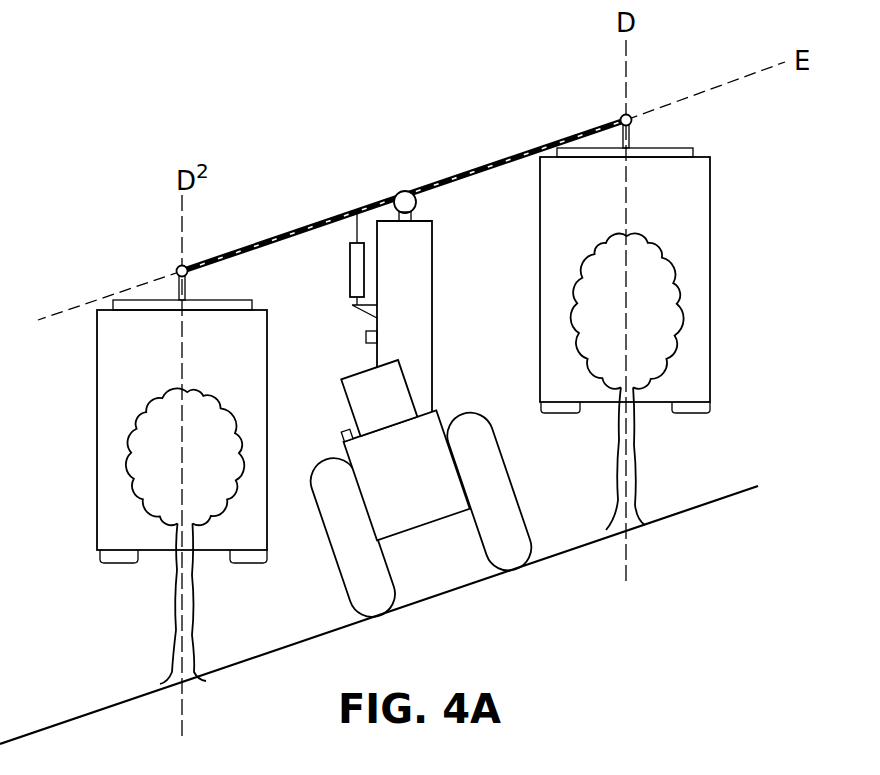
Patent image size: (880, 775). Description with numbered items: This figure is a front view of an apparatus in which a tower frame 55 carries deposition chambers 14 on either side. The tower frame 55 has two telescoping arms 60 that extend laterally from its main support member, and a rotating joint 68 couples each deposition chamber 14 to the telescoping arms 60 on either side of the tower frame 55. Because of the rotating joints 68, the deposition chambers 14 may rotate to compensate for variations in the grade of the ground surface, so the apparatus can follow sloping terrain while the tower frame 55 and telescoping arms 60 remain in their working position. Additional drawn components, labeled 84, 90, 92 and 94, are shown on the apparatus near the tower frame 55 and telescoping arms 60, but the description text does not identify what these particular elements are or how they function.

The deposition chamber 14 is at (97, 388).
The tower frame 55 is at (432, 278).
The telescoping arm 60 is at (290, 234).
The rotating joint 68 is at (177, 268).
The inclinometer 84 is at (345, 430).
The sensor 90 is at (350, 270).
The switch 92 is at (366, 336).
The ball joint 94 is at (406, 190).